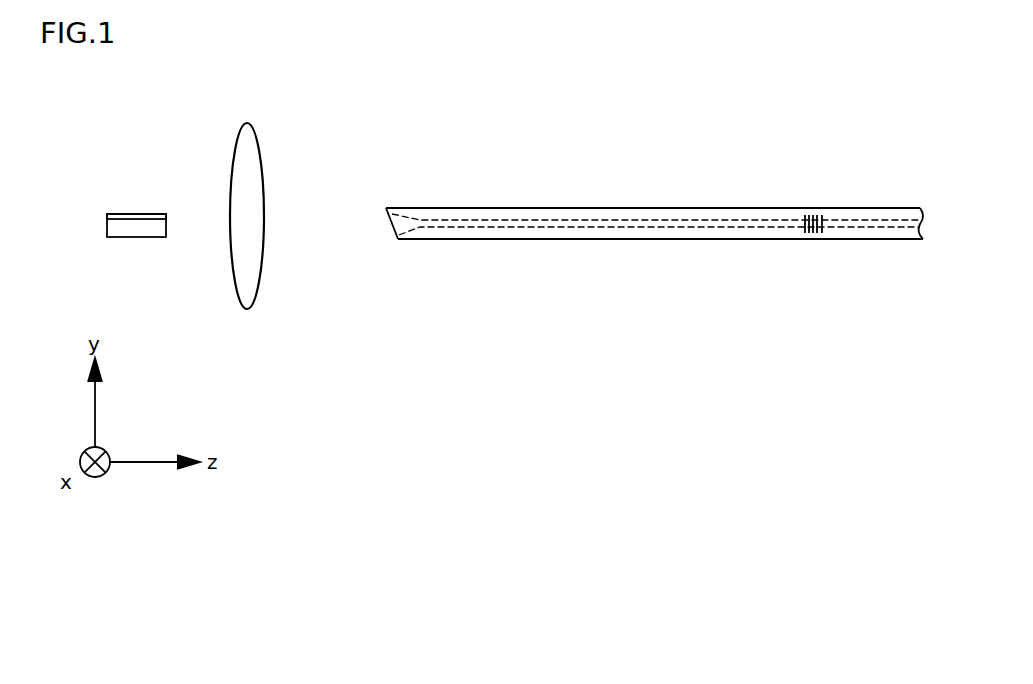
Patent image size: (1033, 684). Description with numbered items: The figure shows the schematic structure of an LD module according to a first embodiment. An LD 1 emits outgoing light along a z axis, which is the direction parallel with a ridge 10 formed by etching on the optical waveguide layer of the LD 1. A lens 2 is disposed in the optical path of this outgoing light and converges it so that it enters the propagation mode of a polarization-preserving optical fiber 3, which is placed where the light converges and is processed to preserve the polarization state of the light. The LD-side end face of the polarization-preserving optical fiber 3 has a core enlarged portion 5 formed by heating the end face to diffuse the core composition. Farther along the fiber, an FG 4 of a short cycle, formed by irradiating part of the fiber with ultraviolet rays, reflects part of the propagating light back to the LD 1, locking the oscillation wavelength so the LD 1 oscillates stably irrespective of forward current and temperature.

The LD 1 is at (138, 239).
The ridge 10 is at (137, 213).
The lens 2 is at (247, 123).
The polarization-preserving optical fiber 3 is at (584, 220).
The FG 4 is at (815, 239).
The core enlarged portion 5 is at (401, 238).